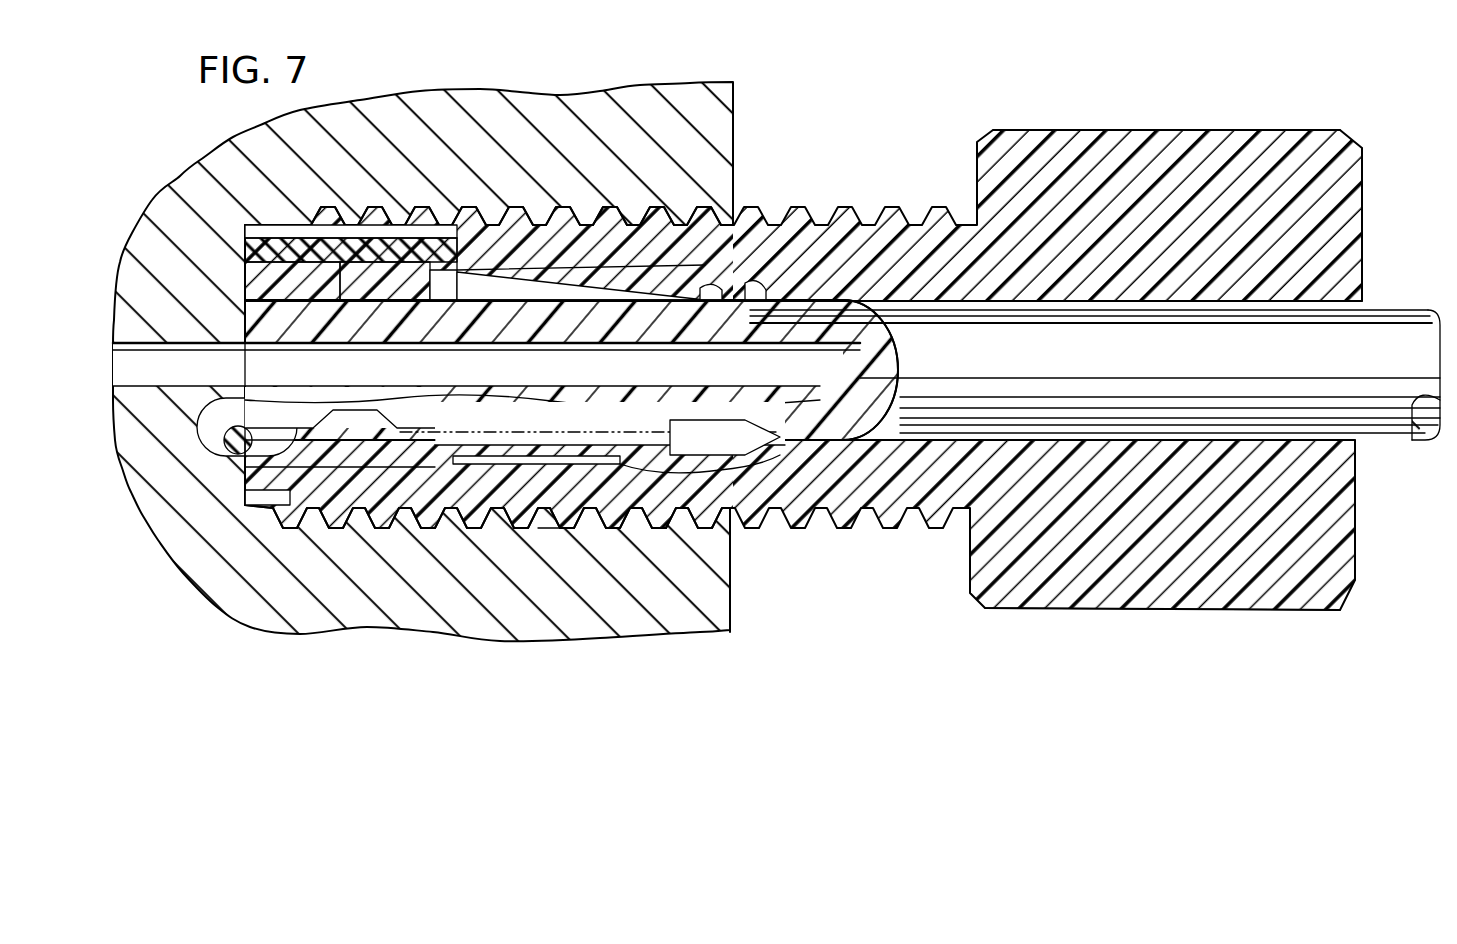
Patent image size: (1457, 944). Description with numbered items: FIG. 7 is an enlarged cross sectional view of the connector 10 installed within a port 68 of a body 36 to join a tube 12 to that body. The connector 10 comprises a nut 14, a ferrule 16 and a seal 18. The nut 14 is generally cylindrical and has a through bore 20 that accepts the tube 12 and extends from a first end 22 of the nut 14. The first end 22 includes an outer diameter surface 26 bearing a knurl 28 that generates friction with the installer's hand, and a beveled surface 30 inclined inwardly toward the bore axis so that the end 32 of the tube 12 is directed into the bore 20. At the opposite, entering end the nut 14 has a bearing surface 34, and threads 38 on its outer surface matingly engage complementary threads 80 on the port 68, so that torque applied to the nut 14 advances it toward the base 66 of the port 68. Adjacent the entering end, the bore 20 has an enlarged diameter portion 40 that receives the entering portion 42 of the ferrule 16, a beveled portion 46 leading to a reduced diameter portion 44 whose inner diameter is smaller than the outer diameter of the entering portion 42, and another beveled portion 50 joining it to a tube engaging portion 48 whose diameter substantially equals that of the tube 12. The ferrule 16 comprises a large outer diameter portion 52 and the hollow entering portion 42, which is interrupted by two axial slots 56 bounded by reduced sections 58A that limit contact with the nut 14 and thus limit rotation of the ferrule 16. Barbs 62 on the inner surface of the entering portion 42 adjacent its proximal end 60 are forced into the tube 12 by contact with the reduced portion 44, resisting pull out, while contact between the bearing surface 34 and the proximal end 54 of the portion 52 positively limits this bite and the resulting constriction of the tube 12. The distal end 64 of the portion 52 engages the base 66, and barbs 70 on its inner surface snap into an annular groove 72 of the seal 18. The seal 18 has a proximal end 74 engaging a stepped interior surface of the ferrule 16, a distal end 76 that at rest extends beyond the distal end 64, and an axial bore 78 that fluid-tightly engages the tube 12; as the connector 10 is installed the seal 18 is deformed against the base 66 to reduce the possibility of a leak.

The connector 10 is at (1090, 650).
The tube 12 is at (1396, 415).
The nut 14 is at (1368, 166).
The ferrule 16 is at (450, 512).
The seal 18 is at (268, 464).
The through bore 20 is at (1362, 306).
The first end 22 is at (1364, 248).
The outer diameter surface 26 is at (1205, 128).
The knurl 28 is at (1035, 131).
The beveled surface 30 is at (1358, 446).
The end 32 is at (238, 305).
The bearing surface 34 is at (430, 260).
The body 36 is at (733, 568).
The threads 38 is at (948, 222).
The enlarged diameter portion 40 is at (505, 264).
The entering portion 42 is at (500, 303).
The reduced diameter portion 44 is at (712, 283).
The beveled portion 46 is at (600, 283).
The tube engaging portion 48 is at (1078, 303).
The beveled portion 50 is at (745, 298).
The large outer diameter portion 52 is at (310, 240).
The proximal end 54 is at (462, 240).
The slot 56 is at (668, 440).
The reduced section 58A is at (495, 468).
The proximal end 60 is at (705, 305).
The barb 62 is at (655, 303).
The distal end 64 is at (262, 255).
The base 66 is at (263, 347).
The port 68 is at (557, 532).
The barb 70 is at (305, 278).
The groove 72 is at (322, 458).
The proximal end 74 is at (408, 428).
The distal end 76 is at (243, 478).
The axial bore 78 is at (210, 424).
The threads 80 is at (377, 522).